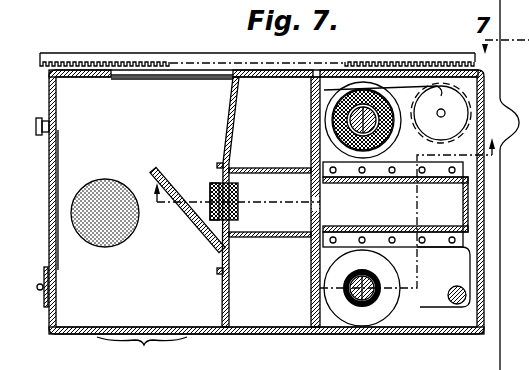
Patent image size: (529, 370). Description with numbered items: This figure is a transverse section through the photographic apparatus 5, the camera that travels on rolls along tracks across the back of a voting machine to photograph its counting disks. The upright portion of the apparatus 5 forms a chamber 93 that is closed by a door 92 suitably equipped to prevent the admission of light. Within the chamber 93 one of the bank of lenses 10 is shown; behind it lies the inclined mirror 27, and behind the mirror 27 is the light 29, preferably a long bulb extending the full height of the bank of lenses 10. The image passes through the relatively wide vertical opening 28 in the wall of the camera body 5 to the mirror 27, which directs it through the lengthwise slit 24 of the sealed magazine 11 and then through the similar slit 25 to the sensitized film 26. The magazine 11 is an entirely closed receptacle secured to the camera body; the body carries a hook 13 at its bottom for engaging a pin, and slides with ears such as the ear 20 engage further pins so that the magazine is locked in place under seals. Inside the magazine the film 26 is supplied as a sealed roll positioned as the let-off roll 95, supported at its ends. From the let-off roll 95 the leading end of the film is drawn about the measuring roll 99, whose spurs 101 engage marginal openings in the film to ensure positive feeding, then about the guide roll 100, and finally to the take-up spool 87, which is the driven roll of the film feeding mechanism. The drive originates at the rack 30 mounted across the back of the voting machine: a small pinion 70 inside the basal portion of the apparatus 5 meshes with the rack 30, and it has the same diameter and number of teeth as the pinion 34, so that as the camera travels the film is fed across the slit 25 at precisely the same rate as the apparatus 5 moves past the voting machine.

The photographic apparatus 5 is at (142, 352).
The lens 10 is at (240, 201).
The sealed magazine 11 is at (438, 334).
The hook 13 is at (328, 203).
The ear 20 is at (514, 185).
The lengthwise slit 24 is at (323, 206).
The slit 25 is at (465, 210).
The film 26 is at (470, 256).
The inclined mirror 27 is at (198, 222).
The vertical opening 28 is at (161, 79).
The light 29 is at (104, 186).
The rack 30 is at (182, 53).
The pinion 34 is at (100, 64).
The pinion 70 is at (376, 70).
The take-up spool 87 is at (380, 288).
The door 92 is at (52, 208).
The chamber 93 is at (55, 97).
The let-off roll 95 is at (336, 122).
The measuring roll 99 is at (441, 63).
The guide roll 100 is at (453, 303).
The spurs 101 is at (438, 136).